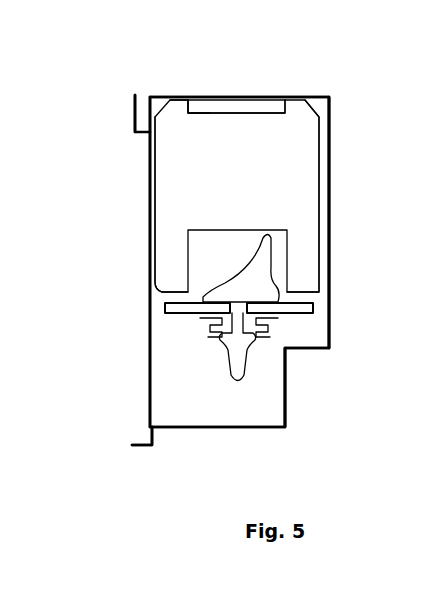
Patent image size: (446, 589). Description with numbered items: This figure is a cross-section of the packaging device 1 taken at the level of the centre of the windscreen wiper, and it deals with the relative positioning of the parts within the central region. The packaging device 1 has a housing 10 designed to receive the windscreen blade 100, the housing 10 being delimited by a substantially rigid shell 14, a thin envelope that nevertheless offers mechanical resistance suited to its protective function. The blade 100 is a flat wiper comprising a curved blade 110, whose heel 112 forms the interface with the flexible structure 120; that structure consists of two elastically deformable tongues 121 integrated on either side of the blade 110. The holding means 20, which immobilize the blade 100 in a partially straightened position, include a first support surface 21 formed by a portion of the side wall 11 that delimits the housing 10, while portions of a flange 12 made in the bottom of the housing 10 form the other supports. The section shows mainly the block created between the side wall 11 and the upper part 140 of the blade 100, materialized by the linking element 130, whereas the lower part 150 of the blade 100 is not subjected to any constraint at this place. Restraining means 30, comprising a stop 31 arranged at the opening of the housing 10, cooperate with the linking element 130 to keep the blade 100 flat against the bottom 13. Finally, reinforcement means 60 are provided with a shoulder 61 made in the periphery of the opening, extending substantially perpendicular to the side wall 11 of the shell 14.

The packaging device 1 is at (198, 428).
The housing 10 is at (188, 383).
The windscreen blade 100 is at (134, 245).
The side wall 11 is at (238, 108).
The curved blade 110 is at (207, 333).
The heel 112 is at (258, 332).
The flange 12 is at (307, 348).
The flexible structure 120 is at (163, 308).
The elastically deformable tongue 121 is at (314, 310).
The bottom 13 is at (312, 148).
The linking element 130 is at (150, 190).
The shell 14 is at (331, 188).
The upper part 140 is at (270, 103).
The lower part 150 is at (259, 362).
The holding means 20 is at (329, 99).
The first support surface 21 is at (203, 118).
The restraining means 30 is at (143, 136).
The stop 31 is at (142, 114).
The reinforcement means 60 is at (139, 446).
The shoulder 61 is at (150, 436).